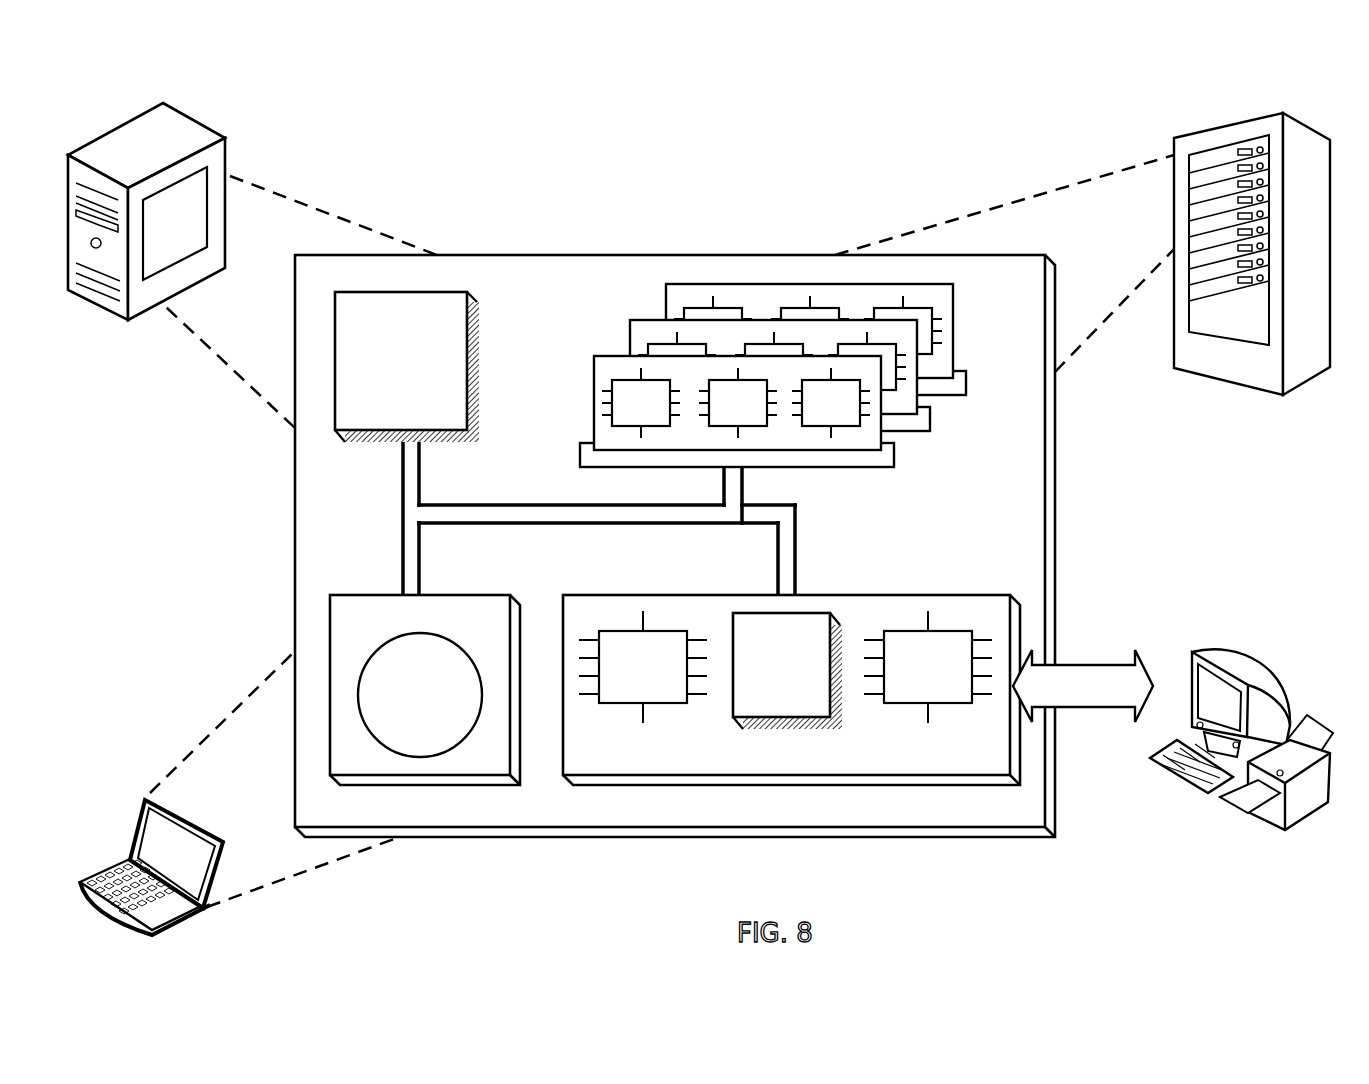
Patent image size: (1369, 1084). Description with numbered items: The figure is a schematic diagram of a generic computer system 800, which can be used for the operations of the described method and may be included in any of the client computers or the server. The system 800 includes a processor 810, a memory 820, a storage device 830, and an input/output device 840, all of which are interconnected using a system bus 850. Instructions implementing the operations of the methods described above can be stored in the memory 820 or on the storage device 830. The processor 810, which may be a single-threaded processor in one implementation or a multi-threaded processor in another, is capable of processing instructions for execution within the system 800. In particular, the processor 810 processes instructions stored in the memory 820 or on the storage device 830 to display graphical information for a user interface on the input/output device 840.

The generic computer system 800 is at (489, 128).
The processor 810 is at (446, 418).
The memory 820 is at (958, 423).
The storage device 830 is at (500, 765).
The input/output device 840 is at (1190, 656).
The system bus 850 is at (596, 525).